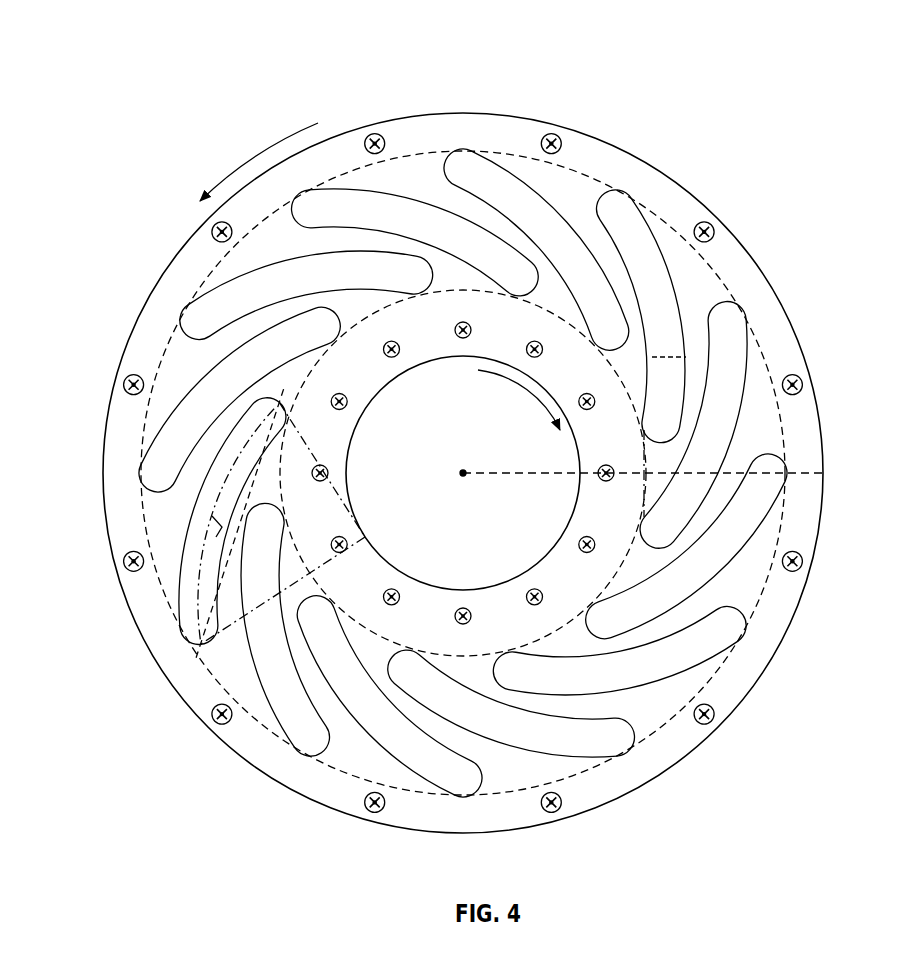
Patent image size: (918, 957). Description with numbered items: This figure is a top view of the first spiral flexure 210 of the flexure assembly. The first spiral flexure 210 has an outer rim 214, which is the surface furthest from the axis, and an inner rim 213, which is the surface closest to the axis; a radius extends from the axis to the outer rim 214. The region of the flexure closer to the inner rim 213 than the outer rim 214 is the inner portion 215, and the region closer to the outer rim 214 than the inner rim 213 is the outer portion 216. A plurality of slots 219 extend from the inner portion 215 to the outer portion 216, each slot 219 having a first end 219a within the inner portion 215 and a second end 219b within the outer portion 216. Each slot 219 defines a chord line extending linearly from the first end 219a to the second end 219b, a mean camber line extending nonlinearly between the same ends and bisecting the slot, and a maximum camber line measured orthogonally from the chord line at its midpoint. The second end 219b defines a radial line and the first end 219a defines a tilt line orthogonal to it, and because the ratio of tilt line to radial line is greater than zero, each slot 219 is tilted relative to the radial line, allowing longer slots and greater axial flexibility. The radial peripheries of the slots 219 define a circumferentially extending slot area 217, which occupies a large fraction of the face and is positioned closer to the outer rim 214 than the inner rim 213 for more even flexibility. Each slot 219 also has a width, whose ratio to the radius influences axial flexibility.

The first spiral flexure 210 is at (423, 436).
The inner rim 213 is at (441, 359).
The outer rim 214 is at (158, 281).
The inner portion 215 is at (571, 586).
The outer portion 216 is at (344, 768).
The slot area 217 is at (722, 278).
The slots 219 is at (443, 472).
The first end 219a is at (291, 404).
The second end 219b is at (198, 652).